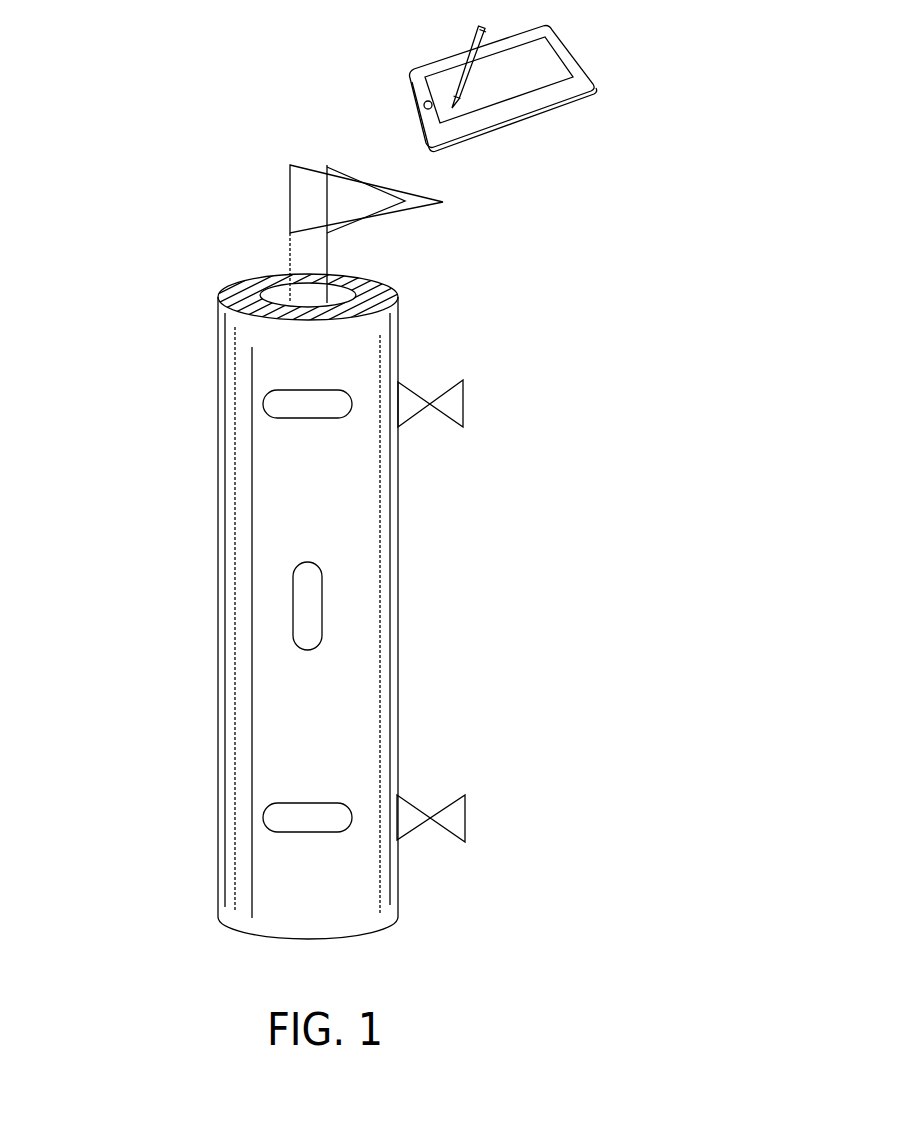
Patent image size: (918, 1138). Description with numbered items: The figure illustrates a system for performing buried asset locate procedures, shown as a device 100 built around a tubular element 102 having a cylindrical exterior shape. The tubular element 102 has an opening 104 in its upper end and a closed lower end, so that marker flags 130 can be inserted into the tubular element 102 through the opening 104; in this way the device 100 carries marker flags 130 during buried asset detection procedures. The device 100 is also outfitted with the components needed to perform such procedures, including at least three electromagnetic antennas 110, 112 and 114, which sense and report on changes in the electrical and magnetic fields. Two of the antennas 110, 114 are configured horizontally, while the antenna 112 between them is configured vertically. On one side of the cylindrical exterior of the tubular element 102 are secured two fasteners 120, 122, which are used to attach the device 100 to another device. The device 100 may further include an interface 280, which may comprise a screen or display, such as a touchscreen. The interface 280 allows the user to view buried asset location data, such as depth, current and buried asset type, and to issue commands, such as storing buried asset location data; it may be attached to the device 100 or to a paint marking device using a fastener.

The device 100 is at (158, 170).
The tubular element 102 is at (218, 337).
The opening 104 is at (350, 293).
The electromagnetic antenna 110 is at (265, 410).
The electromagnetic antenna 112 is at (322, 605).
The electromagnetic antenna 114 is at (265, 815).
The fastener 120 is at (465, 400).
The fastener 122 is at (465, 815).
The marker flag 130 is at (288, 218).
The interface 280 is at (548, 110).